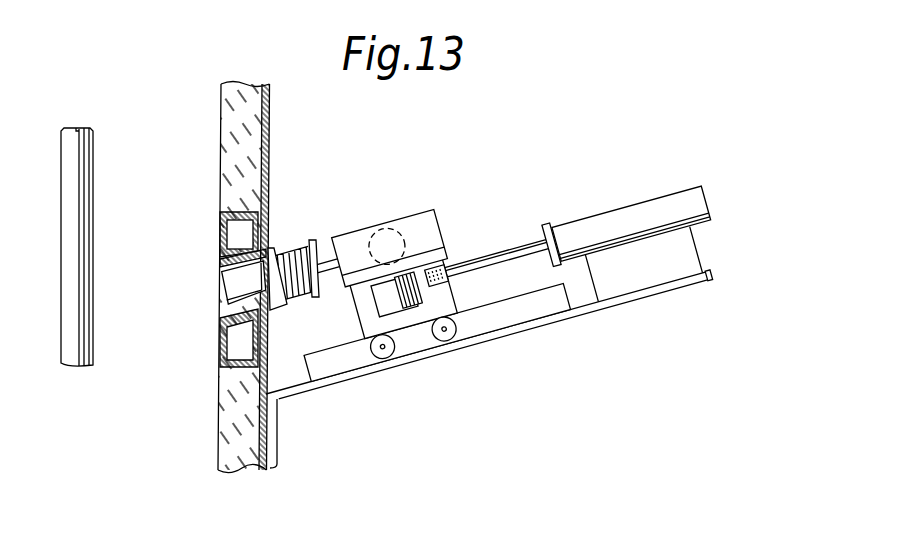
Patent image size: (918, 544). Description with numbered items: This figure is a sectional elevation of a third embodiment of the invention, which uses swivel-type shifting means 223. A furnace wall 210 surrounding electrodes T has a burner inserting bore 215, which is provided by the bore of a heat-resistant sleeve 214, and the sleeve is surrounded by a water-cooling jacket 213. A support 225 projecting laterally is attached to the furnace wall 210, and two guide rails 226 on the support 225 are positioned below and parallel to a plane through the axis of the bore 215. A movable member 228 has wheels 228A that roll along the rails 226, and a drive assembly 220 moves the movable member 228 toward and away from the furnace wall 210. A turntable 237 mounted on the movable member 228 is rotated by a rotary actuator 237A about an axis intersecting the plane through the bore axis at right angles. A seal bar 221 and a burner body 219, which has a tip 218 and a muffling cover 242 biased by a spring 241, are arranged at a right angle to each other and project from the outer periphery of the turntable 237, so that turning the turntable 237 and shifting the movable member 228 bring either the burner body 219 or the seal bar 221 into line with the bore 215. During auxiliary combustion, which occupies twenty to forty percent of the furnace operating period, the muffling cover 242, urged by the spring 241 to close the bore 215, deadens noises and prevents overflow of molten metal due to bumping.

The furnace wall 210 is at (279, 141).
The water-cooling jacket 213 is at (222, 224).
The heat-resistant sleeve 214 is at (222, 267).
The tip 218 is at (220, 293).
The burner inserting bore 215 is at (222, 316).
The muffling cover 242 is at (272, 248).
The spring 241 is at (305, 240).
The burner body 219 is at (343, 255).
The seal bar 221 is at (412, 207).
The turntable 237 is at (432, 228).
The shifting means 223 is at (448, 246).
The drive assembly 220 is at (595, 216).
The movable member 228 is at (355, 322).
The wheels 228A is at (383, 360).
The guide rails 226 is at (413, 345).
The rotary actuator 237A is at (412, 303).
The support 225 is at (541, 320).
The electrodes T is at (62, 306).